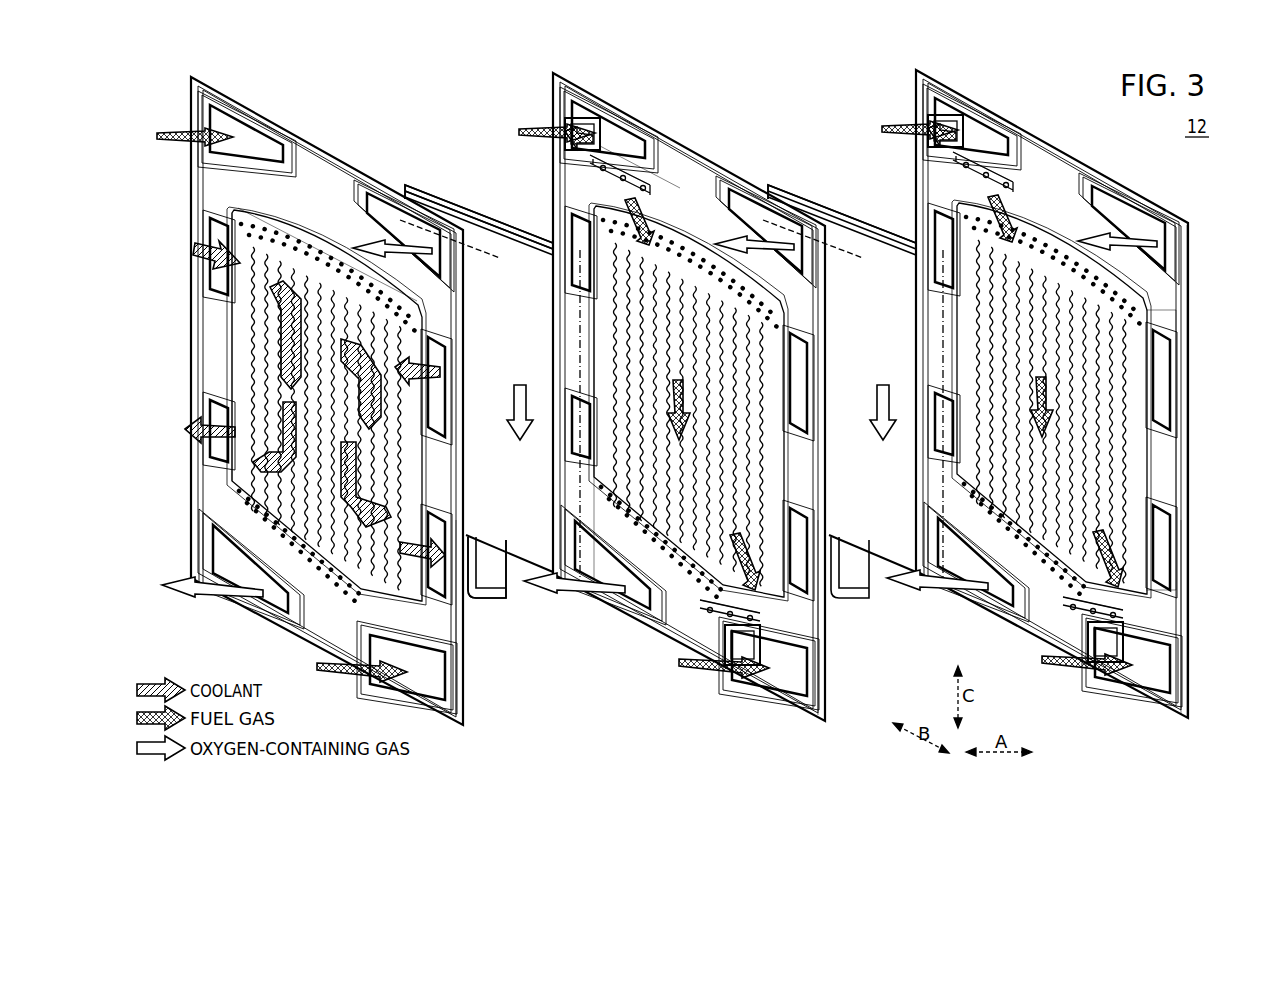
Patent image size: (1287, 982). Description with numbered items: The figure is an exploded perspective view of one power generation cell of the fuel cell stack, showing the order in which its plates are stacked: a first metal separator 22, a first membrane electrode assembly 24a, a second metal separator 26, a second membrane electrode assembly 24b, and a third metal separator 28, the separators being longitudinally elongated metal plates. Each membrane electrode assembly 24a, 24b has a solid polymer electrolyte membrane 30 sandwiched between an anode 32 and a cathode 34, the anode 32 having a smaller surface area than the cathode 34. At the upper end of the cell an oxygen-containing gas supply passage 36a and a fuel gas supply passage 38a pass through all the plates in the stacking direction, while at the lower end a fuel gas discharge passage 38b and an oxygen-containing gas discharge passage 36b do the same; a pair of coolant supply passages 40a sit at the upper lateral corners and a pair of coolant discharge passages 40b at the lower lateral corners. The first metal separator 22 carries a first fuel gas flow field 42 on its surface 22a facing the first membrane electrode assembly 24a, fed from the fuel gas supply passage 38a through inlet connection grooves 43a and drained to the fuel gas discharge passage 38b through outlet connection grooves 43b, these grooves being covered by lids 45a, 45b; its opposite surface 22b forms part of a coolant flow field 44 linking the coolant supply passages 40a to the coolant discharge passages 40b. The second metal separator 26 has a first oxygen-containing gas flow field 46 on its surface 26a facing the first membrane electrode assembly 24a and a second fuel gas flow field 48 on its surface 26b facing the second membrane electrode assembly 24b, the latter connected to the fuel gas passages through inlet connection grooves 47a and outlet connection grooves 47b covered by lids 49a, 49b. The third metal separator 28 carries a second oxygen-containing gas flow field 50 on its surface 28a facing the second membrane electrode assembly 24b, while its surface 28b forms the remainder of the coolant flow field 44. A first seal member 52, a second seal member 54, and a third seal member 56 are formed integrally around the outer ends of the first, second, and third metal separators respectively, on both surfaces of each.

The first metal separator 22 is at (1054, 397).
The surface of the first metal separator 22a is at (1172, 609).
The surface of the first metal separator 22b is at (1180, 635).
The first membrane electrode assembly 24a is at (780, 186).
The second membrane electrode assembly 24b is at (412, 186).
The second metal separator 26 is at (709, 396).
The surface of the second metal separator 26a is at (822, 637).
The surface of the second metal separator 26b is at (820, 617).
The third metal separator 28 is at (685, 402).
The surface of the third metal separator 28a is at (455, 638).
The surface of the third metal separator 28b is at (452, 616).
The solid polymer electrolyte membrane 30 is at (460, 232).
The anode 32 is at (680, 572).
The cathode 34 is at (462, 207).
The oxygen-containing gas supply passage 36a is at (390, 200).
The oxygen-containing gas discharge passage 36b is at (255, 590).
The fuel gas supply passage 38a is at (240, 131).
The fuel gas discharge passage 38b is at (417, 677).
The coolant supply passage 40a is at (215, 254).
The coolant discharge passage 40b is at (230, 458).
The first fuel gas flow field 42 is at (1040, 342).
The inlet connection grooves 43a is at (955, 167).
The outlet connection grooves 43b is at (1085, 613).
The coolant flow field 44 is at (292, 327).
The lid 45a is at (1015, 184).
The lid 45b is at (1097, 627).
The first oxygen-containing gas flow field 46 is at (604, 405).
The inlet connection grooves 47a is at (590, 162).
The outlet connection grooves 47b is at (730, 639).
The second fuel gas flow field 48 is at (690, 342).
The lid 49a is at (648, 206).
The lid 49b is at (748, 599).
The second oxygen-containing gas flow field 50 is at (290, 341).
The first seal member 52 is at (1172, 305).
The second seal member 54 is at (668, 191).
The third seal member 56 is at (292, 349).